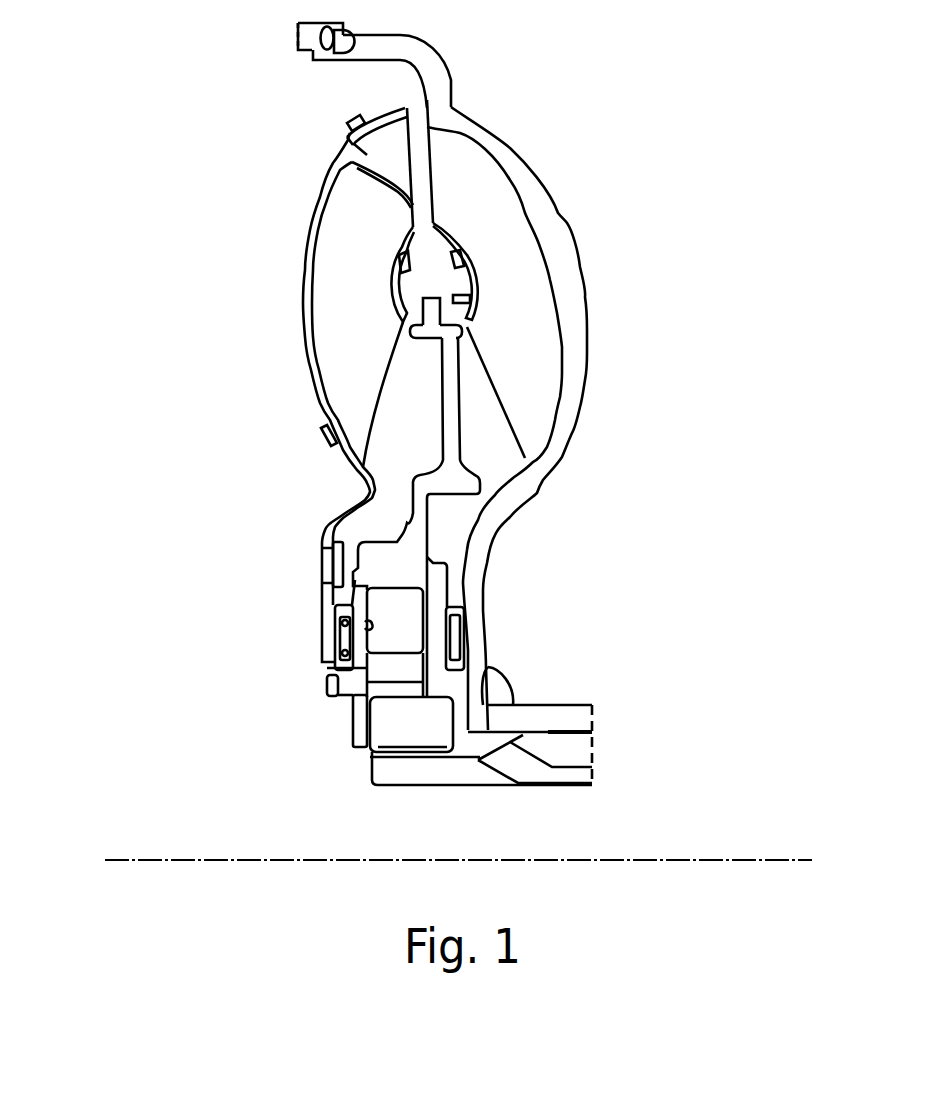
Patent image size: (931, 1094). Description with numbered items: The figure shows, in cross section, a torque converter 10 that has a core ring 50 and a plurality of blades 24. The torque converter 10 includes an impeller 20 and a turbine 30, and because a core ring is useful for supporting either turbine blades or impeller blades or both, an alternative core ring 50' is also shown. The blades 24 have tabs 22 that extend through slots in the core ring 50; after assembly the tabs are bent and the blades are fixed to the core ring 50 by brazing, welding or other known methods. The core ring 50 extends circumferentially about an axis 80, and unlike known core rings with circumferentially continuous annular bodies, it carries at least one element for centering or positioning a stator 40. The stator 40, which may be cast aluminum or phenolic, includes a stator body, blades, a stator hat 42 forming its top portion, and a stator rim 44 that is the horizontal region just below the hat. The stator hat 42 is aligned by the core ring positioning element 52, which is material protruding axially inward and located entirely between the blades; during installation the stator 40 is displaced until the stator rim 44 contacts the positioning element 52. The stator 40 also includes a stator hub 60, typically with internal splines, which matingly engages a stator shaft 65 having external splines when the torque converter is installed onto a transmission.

The torque converter 10 is at (128, 202).
The impeller 20 is at (477, 193).
The tabs 22 is at (442, 248).
The blades 24 is at (397, 167).
The turbine 30 is at (350, 193).
The stator 40 is at (462, 400).
The stator hat 42 is at (442, 316).
The stator rim 44 is at (462, 330).
The core ring 50 is at (571, 259).
The core ring 50' is at (300, 284).
The positioning element 52 is at (473, 299).
The stator hub 60 is at (399, 697).
The stator shaft 65 is at (420, 787).
The axis 80 is at (768, 860).